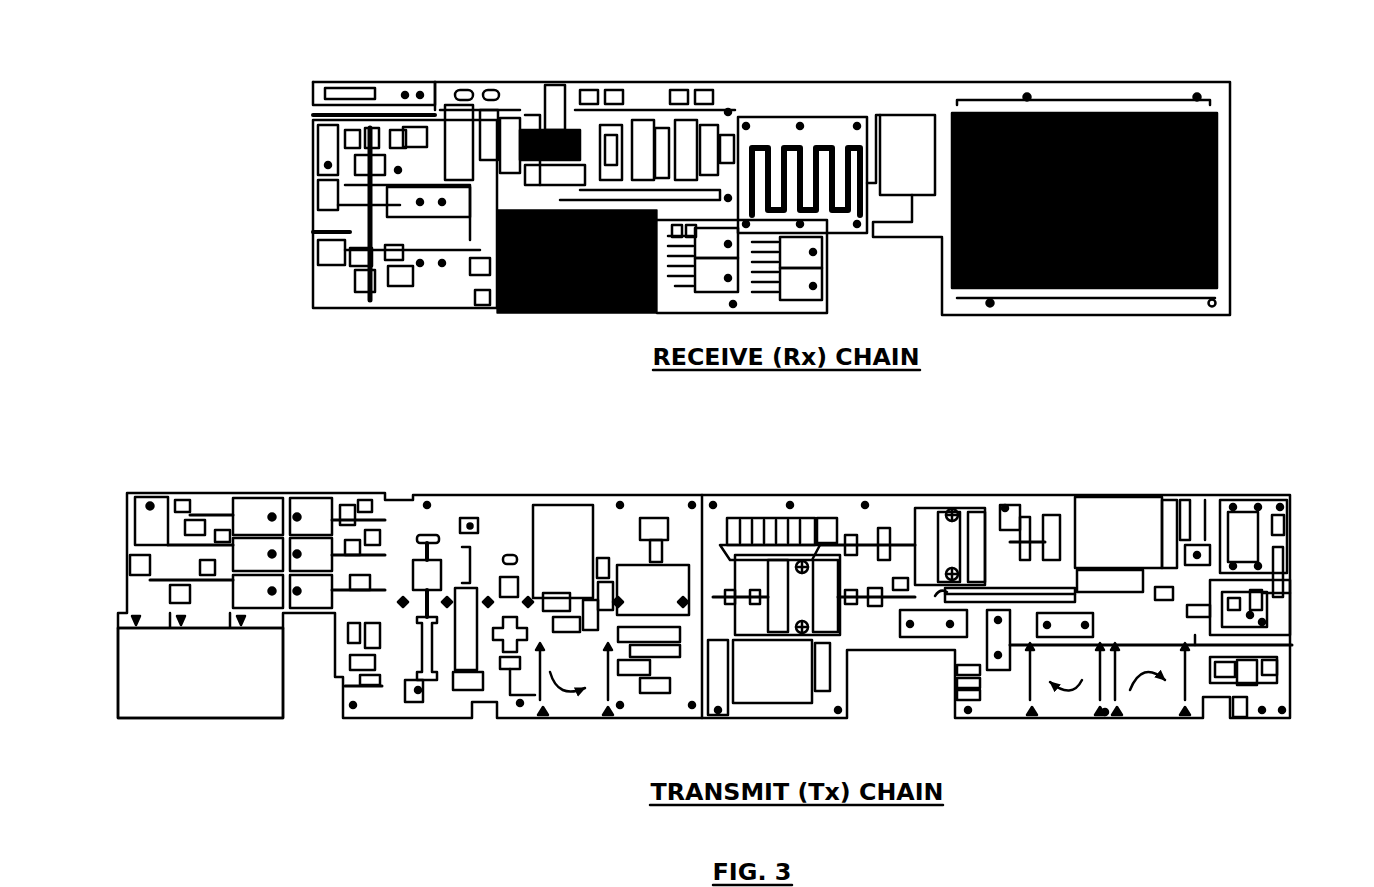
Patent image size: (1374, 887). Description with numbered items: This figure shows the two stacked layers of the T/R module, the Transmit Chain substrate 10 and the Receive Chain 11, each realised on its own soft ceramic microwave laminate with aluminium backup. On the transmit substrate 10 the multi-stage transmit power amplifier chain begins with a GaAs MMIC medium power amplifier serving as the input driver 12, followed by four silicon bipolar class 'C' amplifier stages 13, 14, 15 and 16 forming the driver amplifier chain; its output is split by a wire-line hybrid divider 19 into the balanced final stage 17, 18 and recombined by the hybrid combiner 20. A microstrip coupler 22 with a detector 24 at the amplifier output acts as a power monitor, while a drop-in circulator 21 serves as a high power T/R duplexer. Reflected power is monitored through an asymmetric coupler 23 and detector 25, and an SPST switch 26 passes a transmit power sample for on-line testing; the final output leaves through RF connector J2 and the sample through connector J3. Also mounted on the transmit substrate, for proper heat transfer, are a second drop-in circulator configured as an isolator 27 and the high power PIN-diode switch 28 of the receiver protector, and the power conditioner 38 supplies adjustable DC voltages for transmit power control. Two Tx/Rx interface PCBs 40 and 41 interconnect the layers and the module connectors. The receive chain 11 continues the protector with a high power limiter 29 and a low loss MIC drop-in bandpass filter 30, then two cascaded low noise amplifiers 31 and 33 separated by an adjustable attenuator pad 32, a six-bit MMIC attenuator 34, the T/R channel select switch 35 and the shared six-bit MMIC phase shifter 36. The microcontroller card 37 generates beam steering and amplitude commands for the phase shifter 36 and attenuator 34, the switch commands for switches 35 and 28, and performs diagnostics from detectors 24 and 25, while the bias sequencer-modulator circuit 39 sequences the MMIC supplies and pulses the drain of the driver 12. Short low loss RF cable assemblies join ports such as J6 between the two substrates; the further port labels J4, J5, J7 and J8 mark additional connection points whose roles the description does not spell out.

The Transmit Chain substrate 10 is at (130, 493).
The Receive Chain 11 is at (324, 82).
The input driver 12 is at (365, 692).
The class 'C' amplifier stage 13 is at (422, 592).
The class 'C' amplifier stage 14 is at (510, 608).
The class 'C' amplifier stage 15 is at (573, 712).
The class 'C' amplifier stage 16 is at (646, 598).
The balanced final amplifier stage 17 is at (948, 532).
The balanced final amplifier stage 18 is at (800, 598).
The wire-line hybrid divider 19 is at (760, 528).
The wire-line hybrid combiner 20 is at (1000, 580).
The drop-in circulator 21 is at (1150, 710).
The microstrip coupler 22 is at (1098, 598).
The asymmetric coupler 23 is at (1260, 650).
The detector 24 is at (1195, 537).
The detector 25 is at (1250, 688).
The SPST switch 26 is at (1268, 584).
The drop-in circulator (isolator) 27 is at (1065, 710).
The high power switch 28 is at (995, 676).
The limiter 29 is at (922, 108).
The bandpass filter 30 is at (832, 120).
The low noise amplifier 31 is at (705, 185).
The adjustable attenuator pad 32 is at (659, 185).
The low noise amplifier 33 is at (625, 185).
The digitally controlled attenuator 34 is at (558, 160).
The T/R channel select switch 35 is at (461, 200).
The phase shifter 36 is at (338, 205).
The driver and control/logic circuitry 37 is at (1157, 108).
The power conditioner 38 is at (320, 488).
The bias sequencer-modulator circuit 39 is at (571, 323).
The Tx/Rx interface PCB 40 is at (1245, 522).
The Tx/Rx interface PCB 41 is at (178, 708).
The RF connector J2 is at (1302, 645).
The RF connector J3 is at (1302, 593).
The connector J4 is at (303, 232).
The connector J5 is at (303, 115).
The RF connector J6 is at (328, 688).
The connector J7 is at (900, 660).
The connector J8 is at (873, 248).